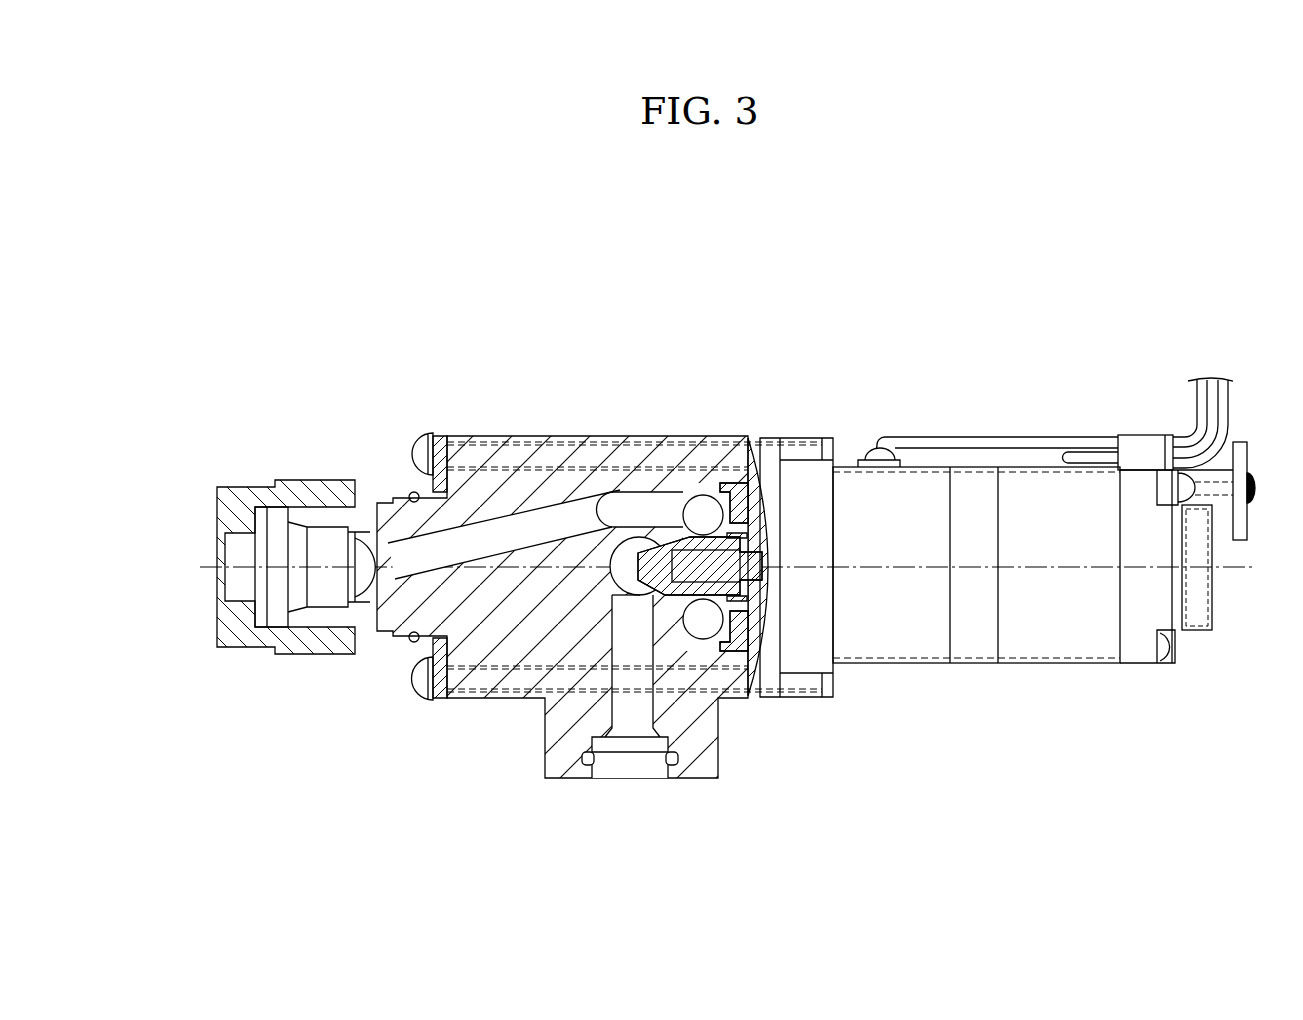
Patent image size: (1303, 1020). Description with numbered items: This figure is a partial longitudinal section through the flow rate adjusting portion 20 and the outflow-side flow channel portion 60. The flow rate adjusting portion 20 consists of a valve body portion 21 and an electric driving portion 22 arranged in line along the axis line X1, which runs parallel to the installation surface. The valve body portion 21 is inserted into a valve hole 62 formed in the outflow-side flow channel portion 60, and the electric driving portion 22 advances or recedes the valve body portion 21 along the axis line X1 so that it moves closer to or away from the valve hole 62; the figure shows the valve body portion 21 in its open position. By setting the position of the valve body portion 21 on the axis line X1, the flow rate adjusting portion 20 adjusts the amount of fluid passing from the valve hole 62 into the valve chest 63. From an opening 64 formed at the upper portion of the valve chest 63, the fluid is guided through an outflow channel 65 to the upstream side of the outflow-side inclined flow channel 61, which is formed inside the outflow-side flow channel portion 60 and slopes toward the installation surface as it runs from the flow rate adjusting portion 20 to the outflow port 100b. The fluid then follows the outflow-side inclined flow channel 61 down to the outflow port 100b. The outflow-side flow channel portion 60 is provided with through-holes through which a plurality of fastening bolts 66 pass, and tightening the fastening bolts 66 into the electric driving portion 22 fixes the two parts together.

The flow rate adjusting portion 20 is at (872, 334).
The valve body portion 21 is at (715, 497).
The electric driving portion 22 is at (912, 665).
The outflow-side flow channel portion 60 is at (562, 434).
The outflow-side inclined flow channel 61 is at (483, 537).
The valve hole 62 is at (610, 577).
The valve chest 63 is at (716, 627).
The opening 64 is at (696, 498).
The outflow channel 65 is at (648, 507).
The fastening bolts 66 is at (412, 446).
The outflow port 100b is at (240, 548).
The axis line X1 is at (1250, 568).